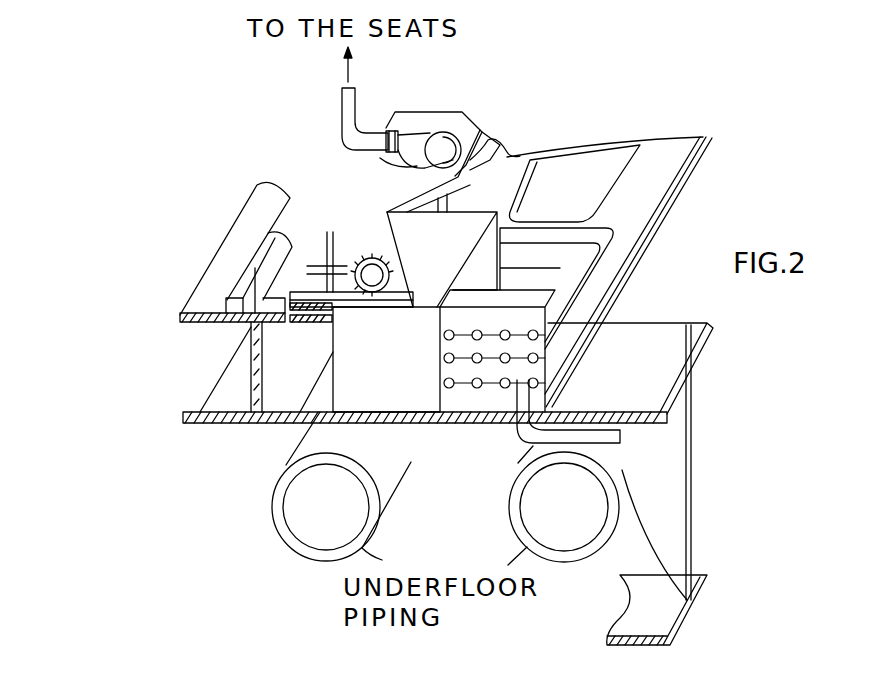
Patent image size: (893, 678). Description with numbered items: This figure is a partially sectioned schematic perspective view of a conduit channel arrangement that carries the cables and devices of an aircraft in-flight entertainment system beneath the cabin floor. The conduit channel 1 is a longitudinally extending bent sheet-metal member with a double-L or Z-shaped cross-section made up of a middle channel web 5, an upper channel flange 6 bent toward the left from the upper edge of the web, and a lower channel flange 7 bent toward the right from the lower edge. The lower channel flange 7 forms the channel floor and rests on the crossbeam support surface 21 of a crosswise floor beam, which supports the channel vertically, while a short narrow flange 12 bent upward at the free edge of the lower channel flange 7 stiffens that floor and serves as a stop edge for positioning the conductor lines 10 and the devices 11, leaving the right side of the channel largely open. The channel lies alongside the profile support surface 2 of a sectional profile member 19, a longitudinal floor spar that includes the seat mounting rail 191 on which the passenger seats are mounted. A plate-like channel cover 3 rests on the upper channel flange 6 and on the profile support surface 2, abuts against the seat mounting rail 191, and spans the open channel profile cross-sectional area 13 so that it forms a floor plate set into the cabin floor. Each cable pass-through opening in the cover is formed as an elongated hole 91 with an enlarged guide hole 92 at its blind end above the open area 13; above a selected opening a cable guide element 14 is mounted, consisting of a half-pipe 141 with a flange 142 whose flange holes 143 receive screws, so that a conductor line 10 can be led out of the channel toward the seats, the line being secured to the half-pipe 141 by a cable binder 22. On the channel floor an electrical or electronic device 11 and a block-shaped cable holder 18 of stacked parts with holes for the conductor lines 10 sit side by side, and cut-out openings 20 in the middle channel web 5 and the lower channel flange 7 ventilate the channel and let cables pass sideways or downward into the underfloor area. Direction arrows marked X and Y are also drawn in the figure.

The conduit channel 1 is at (330, 421).
The profile support surface 2 is at (268, 367).
The channel cover 3 is at (415, 118).
The middle channel web 5 is at (333, 352).
The upper channel flange 6 is at (283, 350).
The lower channel flange 7 is at (664, 167).
The conductor line 10 is at (342, 104).
The electrical or electronic device 11 is at (406, 405).
The narrow flange 12 is at (710, 142).
The open channel profile cross-sectional area 13 is at (385, 389).
The cable guide element 14 is at (428, 125).
The cable holder 18 is at (538, 291).
The sectional profile member 19 is at (190, 268).
The cut-out openings 20 is at (570, 180).
The crossbeam support surface 21 is at (717, 340).
The cable binder 22 is at (392, 123).
The elongated hole 91 is at (312, 282).
The guide hole 92 is at (360, 293).
The half-pipe 141 is at (370, 162).
The flange 142 is at (500, 134).
The flange holes 143 is at (510, 153).
The seat mounting rail 191 is at (265, 252).
The X direction X is at (341, 229).
The Y direction Y is at (360, 248).